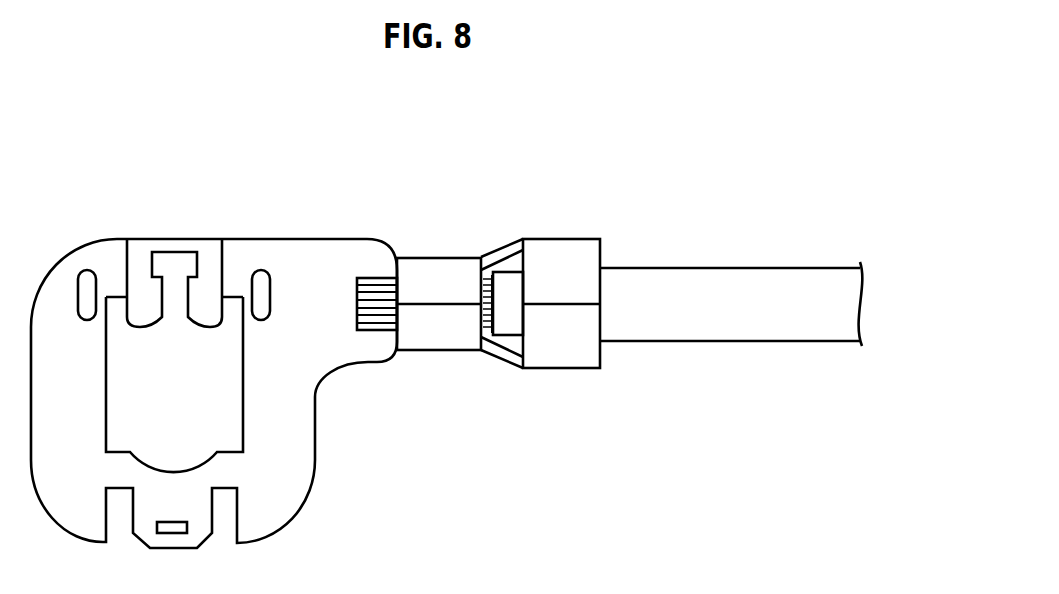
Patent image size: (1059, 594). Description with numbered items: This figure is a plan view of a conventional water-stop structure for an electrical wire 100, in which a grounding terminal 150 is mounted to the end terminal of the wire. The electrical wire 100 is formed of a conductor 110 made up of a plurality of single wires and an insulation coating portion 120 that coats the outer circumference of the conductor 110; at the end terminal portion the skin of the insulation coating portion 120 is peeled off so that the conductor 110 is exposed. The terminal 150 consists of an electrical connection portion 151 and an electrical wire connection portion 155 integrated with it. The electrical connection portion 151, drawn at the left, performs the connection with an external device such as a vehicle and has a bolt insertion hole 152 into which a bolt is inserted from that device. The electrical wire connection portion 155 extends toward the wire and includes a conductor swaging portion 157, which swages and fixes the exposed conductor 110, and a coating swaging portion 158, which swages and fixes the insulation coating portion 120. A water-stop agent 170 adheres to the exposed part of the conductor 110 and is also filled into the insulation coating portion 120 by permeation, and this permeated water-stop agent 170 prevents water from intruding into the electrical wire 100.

The electrical wire 100 is at (684, 252).
The conductor 110 is at (372, 325).
The insulation coating portion 120 is at (507, 328).
The terminal 150 is at (237, 219).
The electrical connection portion 151 is at (177, 228).
The bolt insertion hole 152 is at (122, 418).
The electrical wire connection portion 155 is at (479, 246).
The conductor swaging portion 157 is at (440, 340).
The coating swaging portion 158 is at (563, 358).
The water-stop agent 170 is at (489, 345).